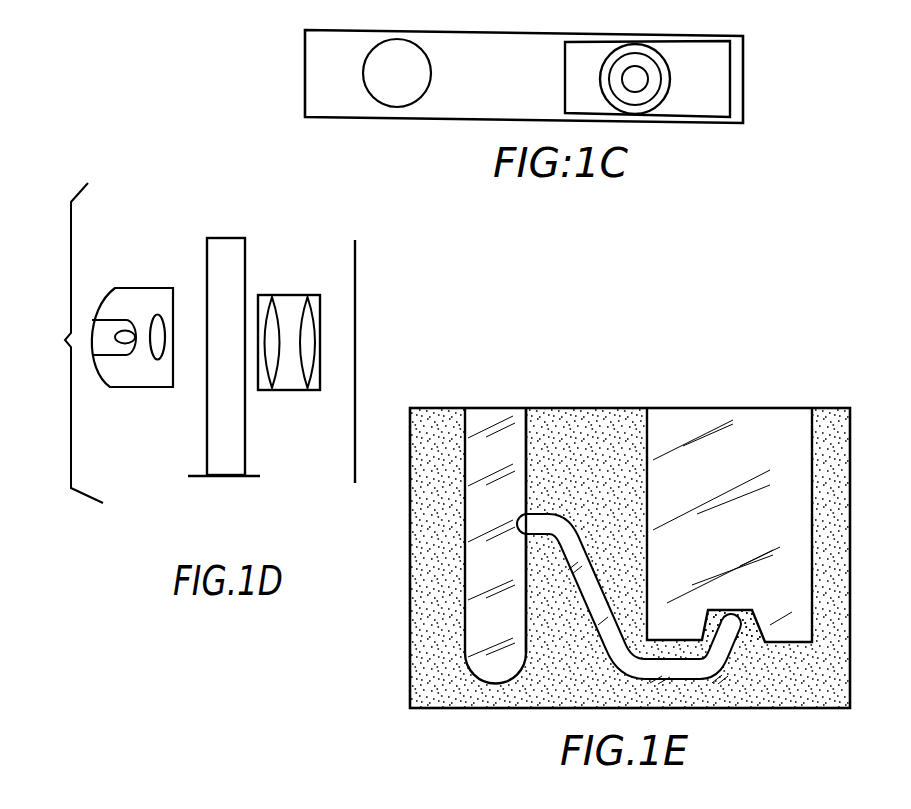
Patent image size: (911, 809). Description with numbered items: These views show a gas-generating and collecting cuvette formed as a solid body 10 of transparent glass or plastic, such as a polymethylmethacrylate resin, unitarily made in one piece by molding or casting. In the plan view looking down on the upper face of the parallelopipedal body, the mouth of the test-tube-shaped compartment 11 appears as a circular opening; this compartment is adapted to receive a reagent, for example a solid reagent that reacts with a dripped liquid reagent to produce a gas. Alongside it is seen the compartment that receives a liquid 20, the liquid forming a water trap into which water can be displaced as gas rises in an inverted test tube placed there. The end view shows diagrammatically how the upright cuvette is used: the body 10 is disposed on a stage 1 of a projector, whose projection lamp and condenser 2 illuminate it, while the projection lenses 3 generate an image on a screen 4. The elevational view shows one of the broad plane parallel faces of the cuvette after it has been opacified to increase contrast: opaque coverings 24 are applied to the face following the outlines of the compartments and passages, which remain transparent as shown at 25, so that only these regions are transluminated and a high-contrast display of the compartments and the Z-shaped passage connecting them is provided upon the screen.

In FIG. 1D, the stage 1 is at (228, 478).
In FIG. 1D, the projection lamp and condenser 2 is at (145, 280).
In FIG. 1D, the projection lenses 3 is at (293, 295).
In FIG. 1D, the screen 4 is at (357, 288).
In FIG. 1D, the solid body 10 is at (226, 238).
In FIG. 1C, the test-tube-shaped compartment 11 is at (397, 98).
In FIG. 1C, the liquid 20 is at (729, 74).
In FIG. 1E, the opaque coverings 24 is at (595, 515).
In FIG. 1E, the transparent regions 25 is at (502, 428).